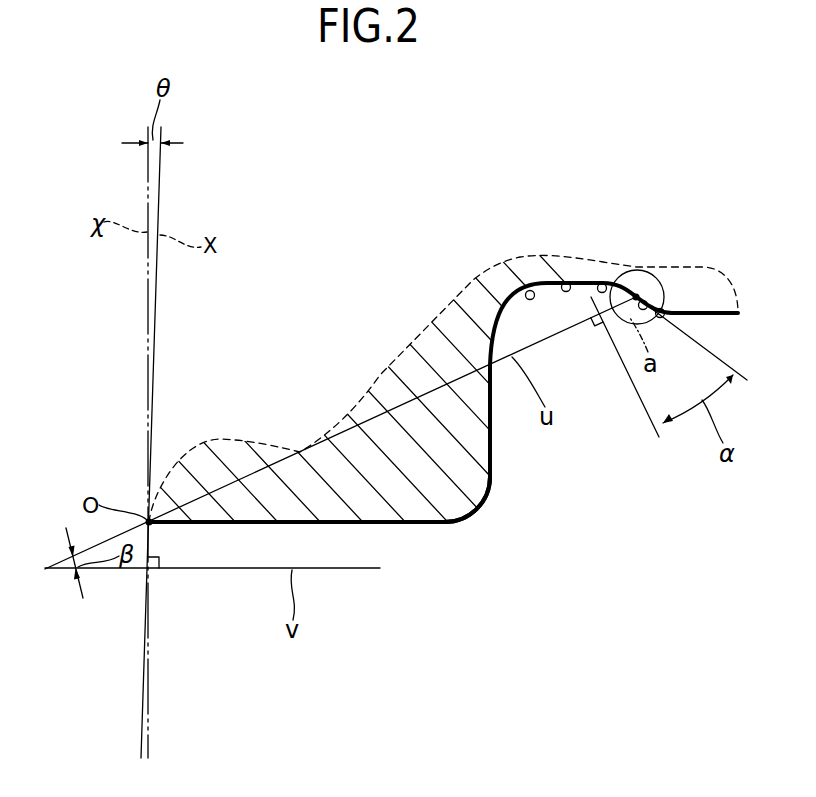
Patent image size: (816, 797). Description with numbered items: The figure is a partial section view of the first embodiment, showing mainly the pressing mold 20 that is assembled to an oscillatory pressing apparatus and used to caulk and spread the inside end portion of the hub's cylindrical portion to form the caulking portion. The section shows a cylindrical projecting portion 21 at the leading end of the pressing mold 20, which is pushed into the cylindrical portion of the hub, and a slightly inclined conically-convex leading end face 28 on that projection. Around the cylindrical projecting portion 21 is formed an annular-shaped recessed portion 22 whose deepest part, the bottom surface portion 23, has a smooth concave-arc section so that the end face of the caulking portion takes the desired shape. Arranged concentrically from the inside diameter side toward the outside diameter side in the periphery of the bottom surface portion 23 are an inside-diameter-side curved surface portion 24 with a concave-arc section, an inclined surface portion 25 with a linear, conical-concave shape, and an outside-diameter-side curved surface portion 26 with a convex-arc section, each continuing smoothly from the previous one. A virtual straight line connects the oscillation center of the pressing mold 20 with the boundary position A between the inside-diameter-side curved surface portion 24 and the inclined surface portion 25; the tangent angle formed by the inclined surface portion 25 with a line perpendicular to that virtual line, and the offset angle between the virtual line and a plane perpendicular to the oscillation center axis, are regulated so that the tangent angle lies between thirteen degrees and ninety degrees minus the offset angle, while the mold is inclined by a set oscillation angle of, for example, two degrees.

The pressing mold 20 is at (470, 447).
The cylindrical projecting portion 21 is at (447, 498).
The annular-shaped recessed portion 22 is at (530, 291).
The bottom surface portion 23 is at (566, 283).
The inside-diameter-side curved surface portion 24 is at (602, 284).
The inclined surface portion 25 is at (643, 301).
The outside-diameter-side curved surface portion 26 is at (660, 309).
The leading end face 28 is at (372, 523).
The boundary position A is at (636, 292).